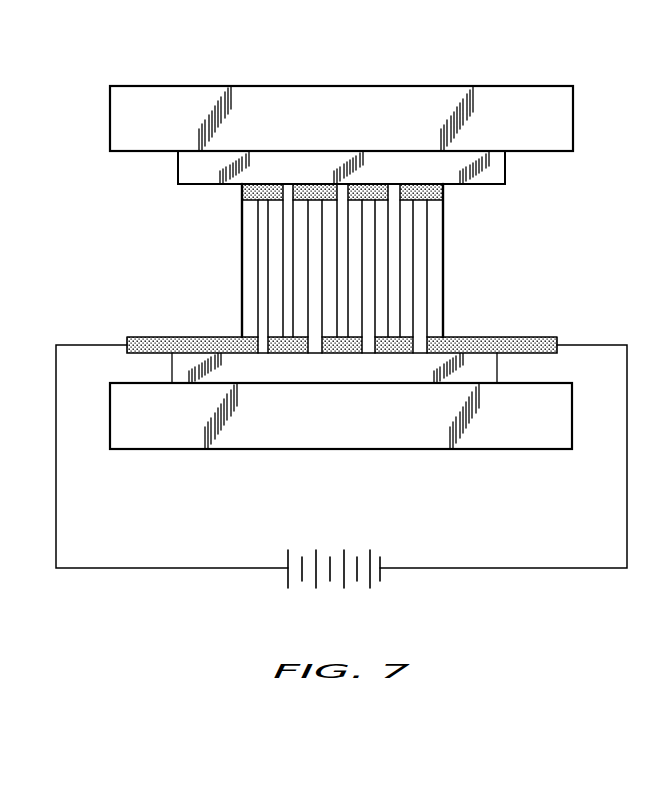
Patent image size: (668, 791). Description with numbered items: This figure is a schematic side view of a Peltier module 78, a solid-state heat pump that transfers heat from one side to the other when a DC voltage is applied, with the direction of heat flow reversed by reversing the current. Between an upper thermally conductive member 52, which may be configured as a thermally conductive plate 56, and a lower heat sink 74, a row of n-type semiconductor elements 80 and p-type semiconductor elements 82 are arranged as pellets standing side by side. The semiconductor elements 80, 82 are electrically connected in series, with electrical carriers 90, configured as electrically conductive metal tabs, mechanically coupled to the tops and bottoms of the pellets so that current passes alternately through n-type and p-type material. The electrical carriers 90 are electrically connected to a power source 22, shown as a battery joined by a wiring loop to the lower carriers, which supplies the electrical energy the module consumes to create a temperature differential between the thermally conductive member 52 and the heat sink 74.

The power source 22 is at (370, 552).
The thermally conductive member 52 is at (187, 86).
The thermally conductive plate 56 is at (340, 86).
The heat sink 74 is at (505, 449).
The Peltier module 78 is at (565, 182).
The n-type semiconductor element 80 is at (252, 305).
The p-type semiconductor element 82 is at (262, 250).
The electrical carrier 90 is at (313, 192).